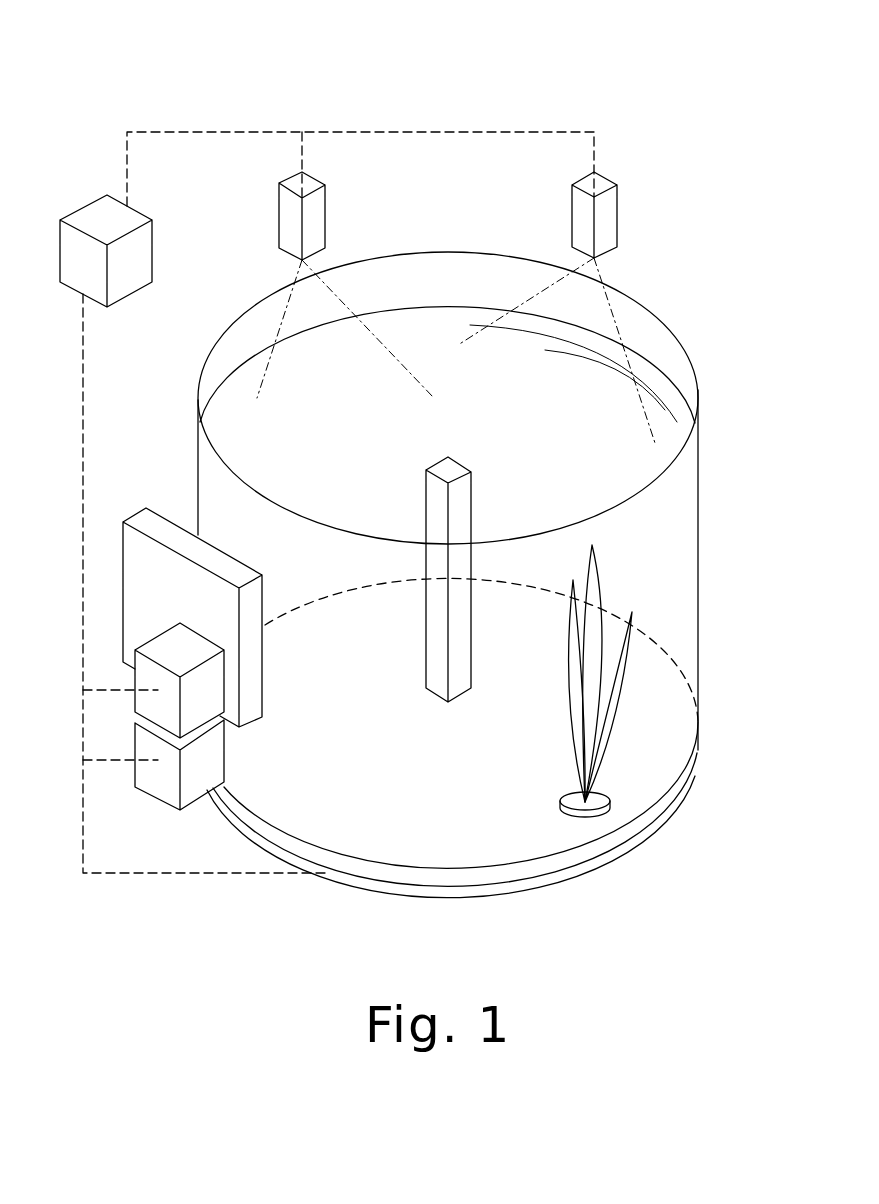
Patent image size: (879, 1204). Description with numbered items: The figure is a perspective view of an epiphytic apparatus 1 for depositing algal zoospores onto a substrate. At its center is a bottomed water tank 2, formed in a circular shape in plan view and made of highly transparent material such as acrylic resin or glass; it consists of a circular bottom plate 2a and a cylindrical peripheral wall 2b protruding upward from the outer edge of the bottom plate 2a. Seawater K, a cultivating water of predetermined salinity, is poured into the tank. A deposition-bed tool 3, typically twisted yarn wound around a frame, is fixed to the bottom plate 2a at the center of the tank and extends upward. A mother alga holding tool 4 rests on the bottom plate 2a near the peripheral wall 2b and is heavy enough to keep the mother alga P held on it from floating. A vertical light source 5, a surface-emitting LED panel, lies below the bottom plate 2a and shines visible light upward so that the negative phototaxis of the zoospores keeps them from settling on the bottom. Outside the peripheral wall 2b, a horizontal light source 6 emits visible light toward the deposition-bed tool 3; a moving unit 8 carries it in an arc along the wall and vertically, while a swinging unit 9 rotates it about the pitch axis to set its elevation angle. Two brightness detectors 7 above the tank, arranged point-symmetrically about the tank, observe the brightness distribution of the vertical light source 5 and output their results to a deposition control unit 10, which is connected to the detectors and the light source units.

The epiphytic apparatus 1 is at (745, 74).
The bottomed water tank 2 is at (680, 339).
The bottom plate 2a is at (665, 771).
The peripheral wall 2b is at (700, 498).
The deposition-bed tool 3 is at (460, 489).
The mother alga holding tool 4 is at (570, 798).
The vertical light source 5 is at (663, 822).
The horizontal light source 6 is at (160, 528).
The brightness detector 7 is at (320, 203).
The moving unit 8 is at (148, 747).
The swinging unit 9 is at (147, 675).
The deposition control unit 10 is at (105, 217).
The seawater K is at (371, 403).
The mother alga P is at (561, 693).